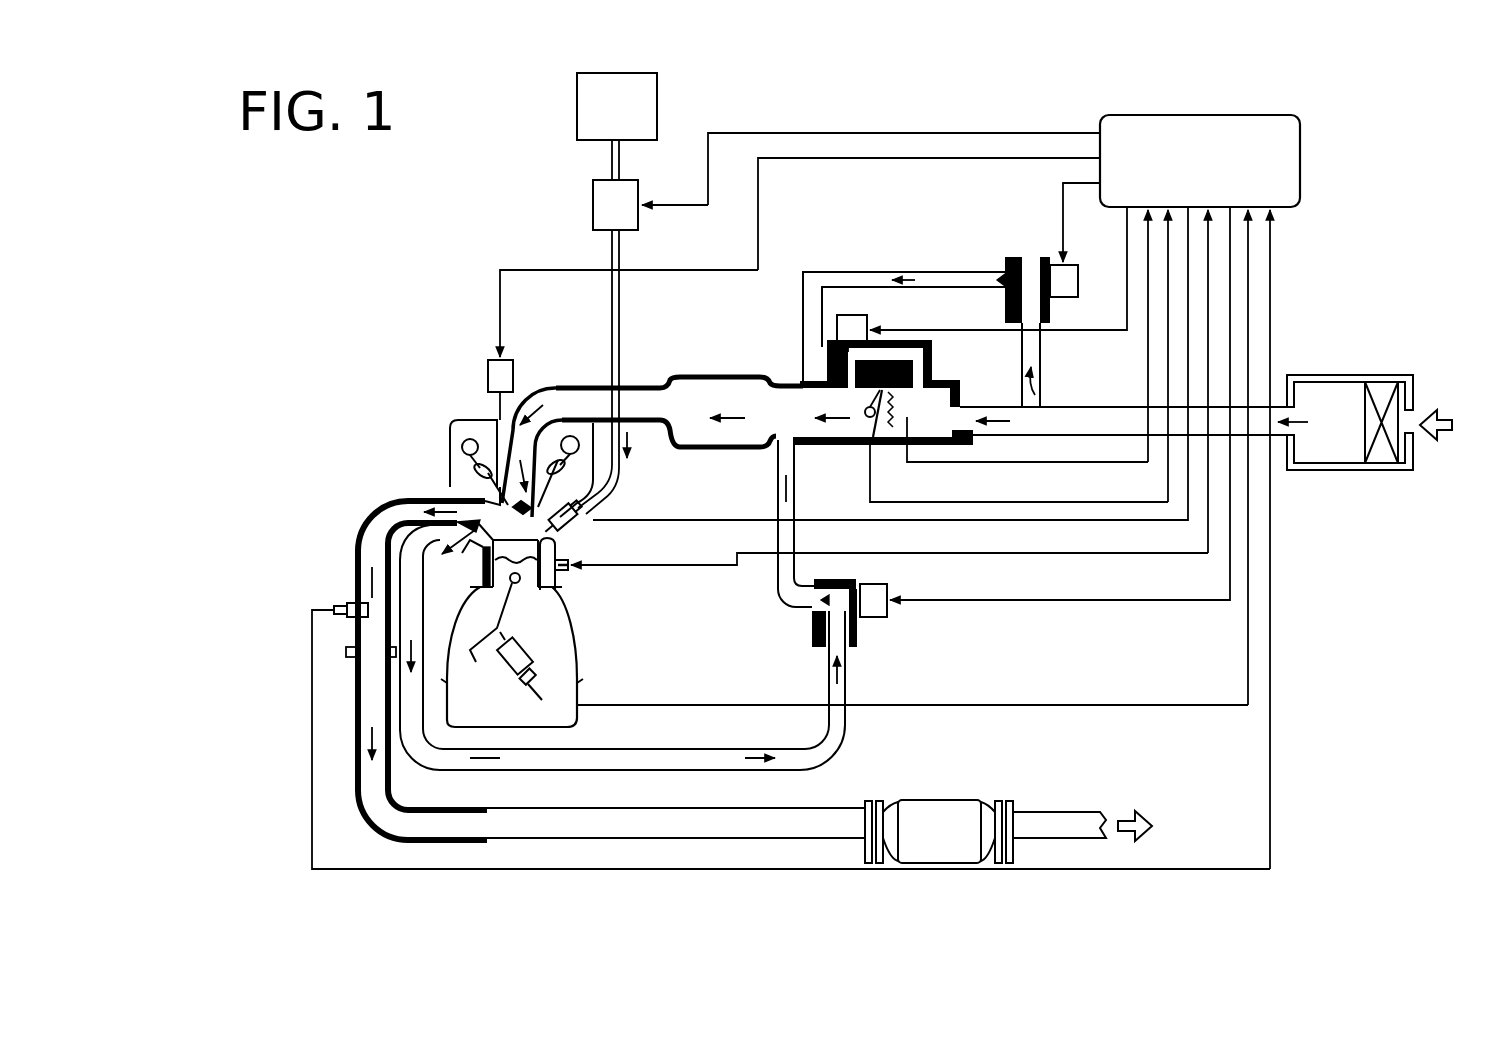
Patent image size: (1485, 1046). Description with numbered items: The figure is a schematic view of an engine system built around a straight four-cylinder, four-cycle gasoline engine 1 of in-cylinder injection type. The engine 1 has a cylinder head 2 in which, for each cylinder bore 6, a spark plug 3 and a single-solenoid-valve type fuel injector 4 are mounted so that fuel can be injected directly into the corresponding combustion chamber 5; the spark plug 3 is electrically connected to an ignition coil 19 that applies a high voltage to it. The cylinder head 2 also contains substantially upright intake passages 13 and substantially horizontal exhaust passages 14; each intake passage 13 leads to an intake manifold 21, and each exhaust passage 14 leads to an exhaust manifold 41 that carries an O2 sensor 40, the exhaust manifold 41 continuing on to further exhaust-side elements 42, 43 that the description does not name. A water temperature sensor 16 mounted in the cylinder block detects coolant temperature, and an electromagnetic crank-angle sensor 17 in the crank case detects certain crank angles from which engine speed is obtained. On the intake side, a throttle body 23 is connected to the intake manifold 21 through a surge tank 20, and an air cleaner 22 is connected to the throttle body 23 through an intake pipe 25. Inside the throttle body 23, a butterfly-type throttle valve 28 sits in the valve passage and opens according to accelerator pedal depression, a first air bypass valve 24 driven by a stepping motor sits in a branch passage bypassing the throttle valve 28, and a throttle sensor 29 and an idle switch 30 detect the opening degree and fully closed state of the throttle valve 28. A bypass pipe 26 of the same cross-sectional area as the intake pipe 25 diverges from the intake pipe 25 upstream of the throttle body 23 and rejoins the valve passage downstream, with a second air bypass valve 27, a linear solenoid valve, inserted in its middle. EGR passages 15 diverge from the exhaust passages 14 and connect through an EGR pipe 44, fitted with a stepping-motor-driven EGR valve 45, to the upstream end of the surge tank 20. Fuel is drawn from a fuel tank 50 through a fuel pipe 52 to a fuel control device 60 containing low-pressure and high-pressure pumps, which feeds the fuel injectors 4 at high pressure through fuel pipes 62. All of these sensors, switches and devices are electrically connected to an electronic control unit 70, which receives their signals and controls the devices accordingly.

The engine 1 is at (598, 637).
The cylinder head 2 is at (455, 420).
The spark plug 3 is at (492, 500).
The fuel injector 4 is at (585, 528).
The combustion chamber 5 is at (481, 560).
The cylinder bore 6 is at (556, 587).
The intake passage 13 is at (543, 392).
The exhaust passage 14 is at (455, 498).
The EGR passage 15 is at (462, 550).
The water temperature sensor 16 is at (572, 570).
The crank-angle sensor 17 is at (520, 686).
The ignition coil 19 is at (488, 372).
The surge tank 20 is at (733, 375).
The intake manifold 21 is at (647, 385).
The air cleaner 22 is at (1345, 375).
The throttle body 23 is at (867, 440).
The first air bypass valve 24 is at (871, 316).
The intake pipe 25 is at (1095, 405).
The bypass pipe 26 is at (945, 270).
The second air bypass valve 27 is at (1030, 257).
The throttle valve 28 is at (862, 428).
The throttle sensor 29 is at (900, 405).
The idle switch 30 is at (876, 432).
The O2 sensor 40 is at (338, 603).
The exhaust manifold 41 is at (360, 535).
The catalytic converter 42 is at (952, 800).
The exhaust pipe 43 is at (828, 812).
The EGR pipe 44 is at (840, 738).
The EGR valve 45 is at (860, 628).
The fuel tank 50 is at (577, 97).
The fuel pipe 52 is at (612, 150).
The fuel control device 60 is at (593, 204).
The fuel pipe 62 is at (622, 470).
The electronic control unit 70 is at (1300, 143).